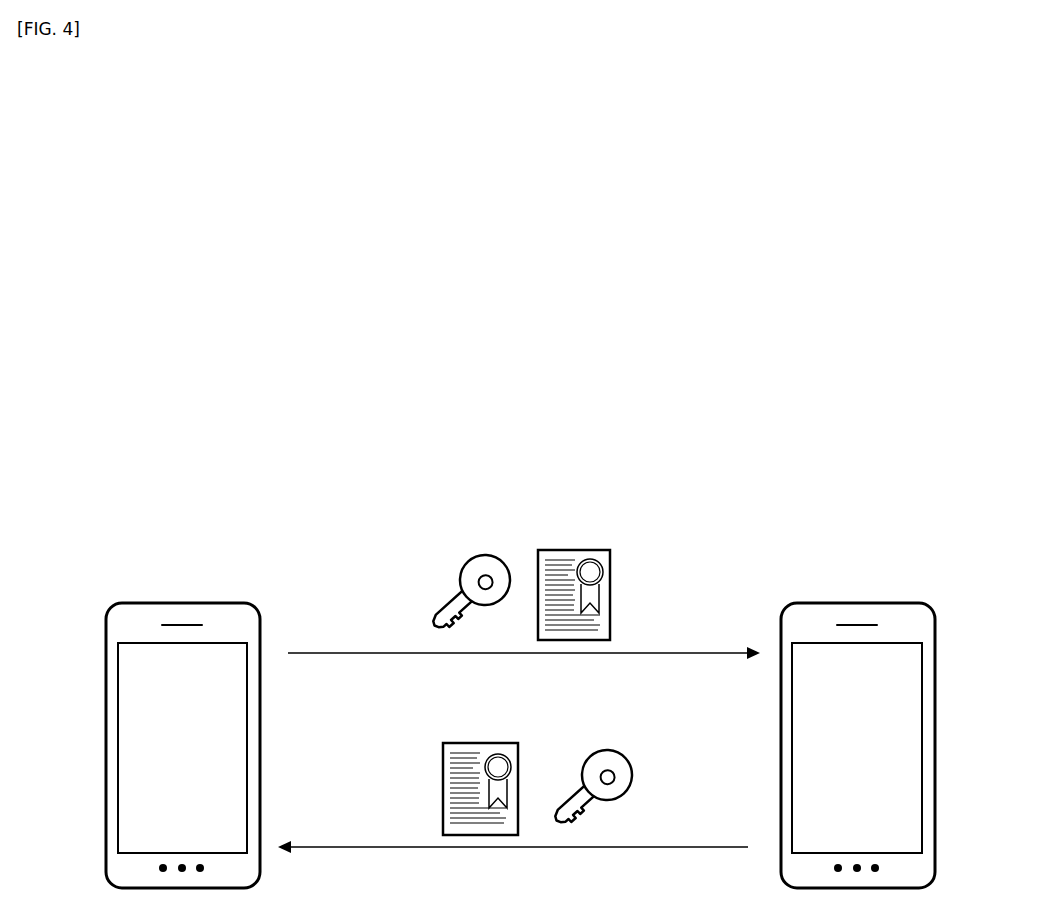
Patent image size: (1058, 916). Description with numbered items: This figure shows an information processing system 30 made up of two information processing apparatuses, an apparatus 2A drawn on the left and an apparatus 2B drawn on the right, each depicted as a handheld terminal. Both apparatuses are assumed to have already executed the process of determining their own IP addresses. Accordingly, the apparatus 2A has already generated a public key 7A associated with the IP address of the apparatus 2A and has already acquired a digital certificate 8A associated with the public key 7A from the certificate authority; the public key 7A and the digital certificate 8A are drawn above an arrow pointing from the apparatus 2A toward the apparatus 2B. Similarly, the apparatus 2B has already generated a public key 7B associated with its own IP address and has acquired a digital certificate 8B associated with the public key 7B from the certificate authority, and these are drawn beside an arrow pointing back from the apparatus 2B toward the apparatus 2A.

The information processing system 30 is at (126, 461).
The information processing apparatus 2A is at (198, 605).
The information processing apparatus 2B is at (873, 605).
The public key 7A is at (484, 553).
The digital certificate 8A is at (591, 548).
The public key 7B is at (632, 755).
The digital certificate 8B is at (442, 763).